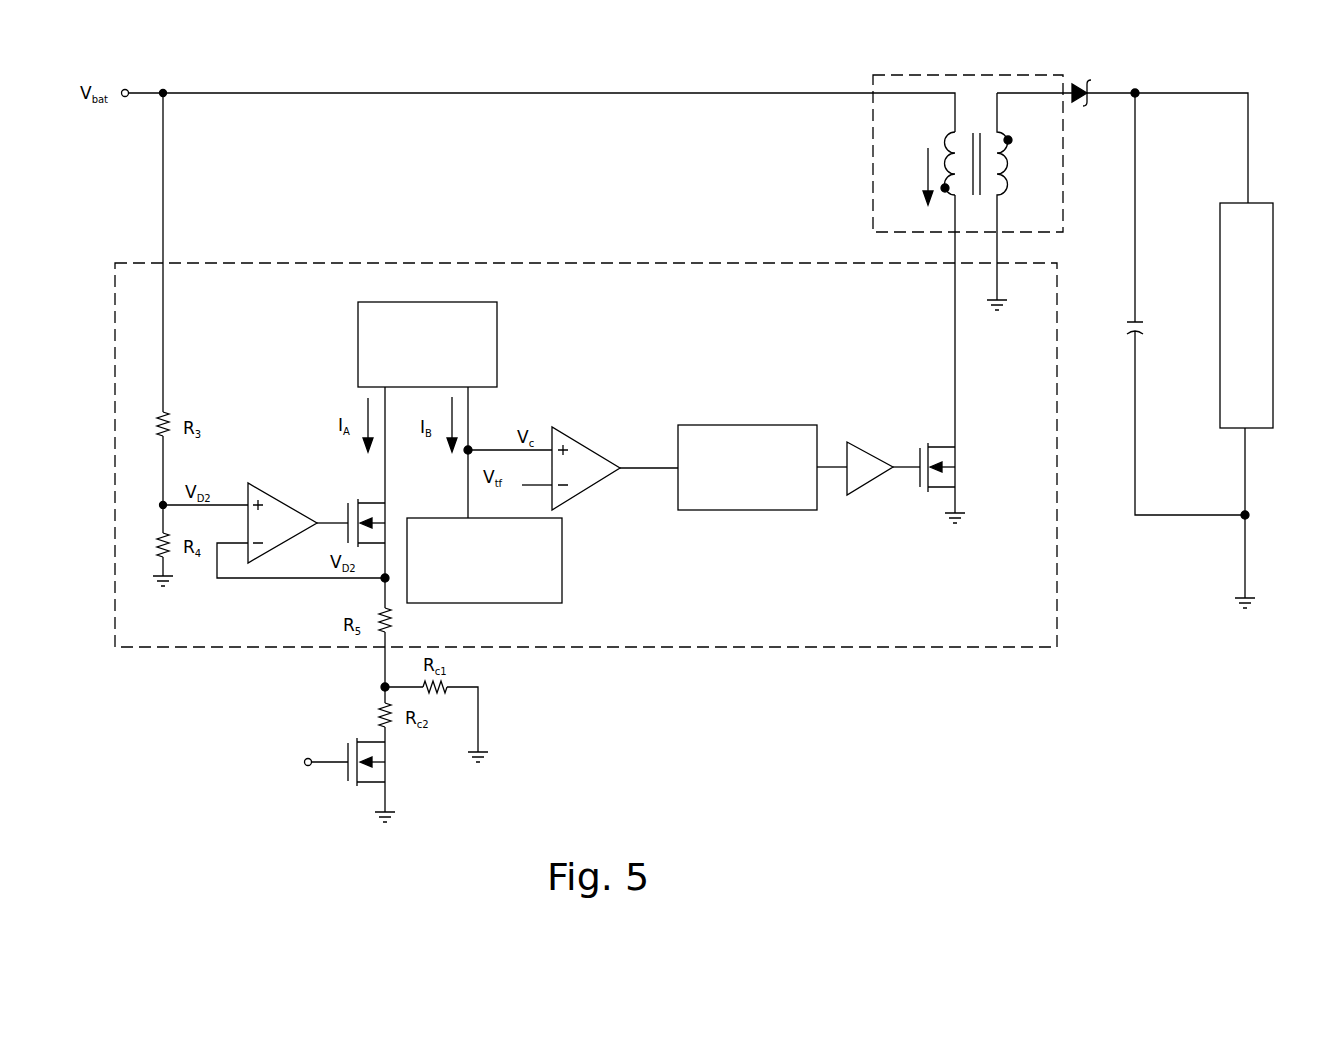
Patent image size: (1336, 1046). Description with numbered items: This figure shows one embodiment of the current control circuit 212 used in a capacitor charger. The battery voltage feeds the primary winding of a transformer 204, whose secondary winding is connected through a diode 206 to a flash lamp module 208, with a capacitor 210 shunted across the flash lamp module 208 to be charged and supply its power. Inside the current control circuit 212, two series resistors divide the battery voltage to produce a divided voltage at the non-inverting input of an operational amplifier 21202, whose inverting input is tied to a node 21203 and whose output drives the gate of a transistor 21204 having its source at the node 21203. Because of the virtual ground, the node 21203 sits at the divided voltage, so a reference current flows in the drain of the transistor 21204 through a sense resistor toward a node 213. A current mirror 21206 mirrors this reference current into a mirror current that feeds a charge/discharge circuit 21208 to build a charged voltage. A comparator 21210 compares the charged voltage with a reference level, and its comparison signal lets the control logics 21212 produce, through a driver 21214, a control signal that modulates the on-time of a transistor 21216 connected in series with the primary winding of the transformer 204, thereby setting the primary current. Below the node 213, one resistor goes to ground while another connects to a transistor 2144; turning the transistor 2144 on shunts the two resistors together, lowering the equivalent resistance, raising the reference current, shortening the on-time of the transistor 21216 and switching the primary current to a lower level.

The transformer 204 is at (873, 152).
The diode 206 is at (1107, 80).
The flash lamp module 208 is at (1277, 307).
The capacitor 210 is at (1150, 305).
The current control circuit 212 is at (583, 263).
The node 213 is at (360, 681).
The transistor 2144 is at (334, 743).
The operational amplifier 21202 is at (282, 495).
The node 21203 is at (375, 585).
The transistor 21204 is at (335, 500).
The current mirror 21206 is at (497, 340).
The charge/discharge circuit 21208 is at (562, 570).
The comparator 21210 is at (584, 443).
The control logics 21212 is at (745, 425).
The driver 21214 is at (870, 448).
The transistor 21216 is at (925, 500).